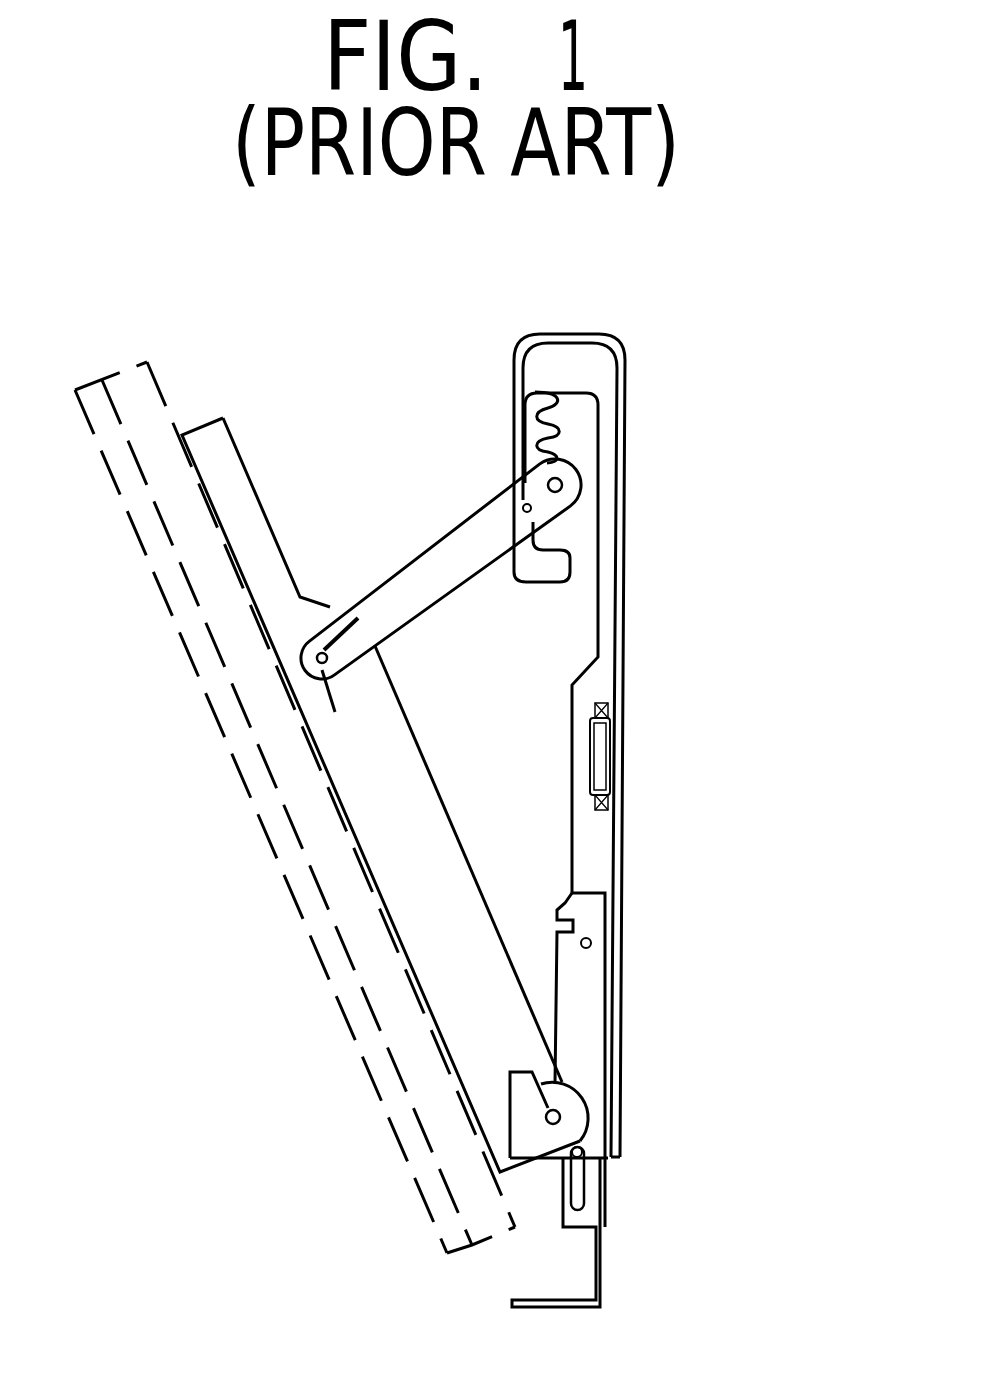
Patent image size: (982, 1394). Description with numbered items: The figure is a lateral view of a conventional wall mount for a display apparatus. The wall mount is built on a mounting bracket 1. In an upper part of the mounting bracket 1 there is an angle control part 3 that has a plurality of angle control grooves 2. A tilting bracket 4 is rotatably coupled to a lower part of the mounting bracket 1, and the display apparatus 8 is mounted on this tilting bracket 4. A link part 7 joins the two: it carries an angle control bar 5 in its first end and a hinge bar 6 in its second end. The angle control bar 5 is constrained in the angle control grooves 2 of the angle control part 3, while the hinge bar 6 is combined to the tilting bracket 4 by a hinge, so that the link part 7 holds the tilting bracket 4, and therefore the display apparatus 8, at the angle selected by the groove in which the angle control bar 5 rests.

The mounting bracket 1 is at (625, 755).
The angle control grooves 2 is at (568, 398).
The angle control part 3 is at (520, 418).
The tilting bracket 4 is at (385, 863).
The angle control bar 5 is at (562, 483).
The hinge bar 6 is at (315, 660).
The link part 7 is at (420, 547).
The display apparatus 8 is at (372, 1087).